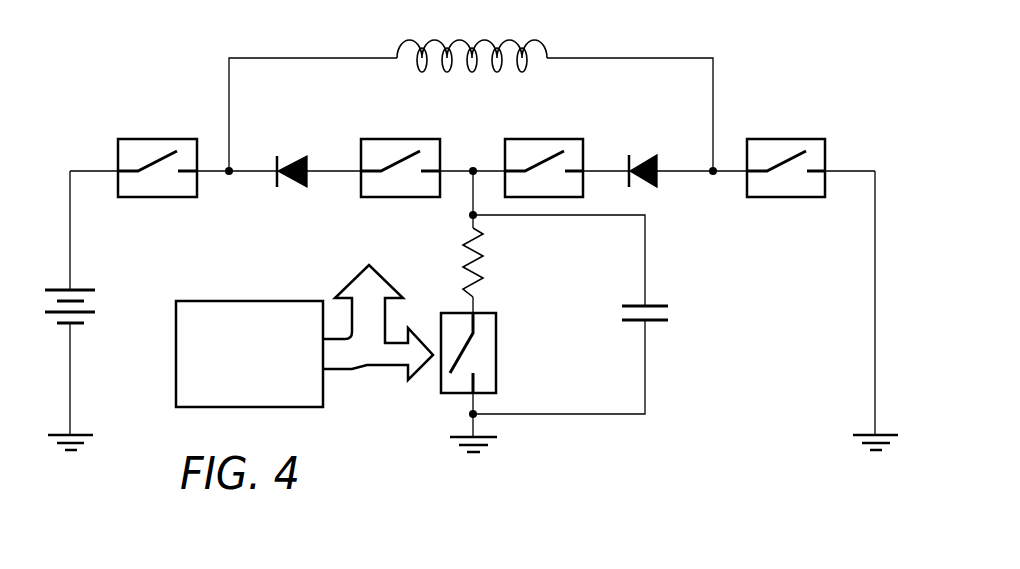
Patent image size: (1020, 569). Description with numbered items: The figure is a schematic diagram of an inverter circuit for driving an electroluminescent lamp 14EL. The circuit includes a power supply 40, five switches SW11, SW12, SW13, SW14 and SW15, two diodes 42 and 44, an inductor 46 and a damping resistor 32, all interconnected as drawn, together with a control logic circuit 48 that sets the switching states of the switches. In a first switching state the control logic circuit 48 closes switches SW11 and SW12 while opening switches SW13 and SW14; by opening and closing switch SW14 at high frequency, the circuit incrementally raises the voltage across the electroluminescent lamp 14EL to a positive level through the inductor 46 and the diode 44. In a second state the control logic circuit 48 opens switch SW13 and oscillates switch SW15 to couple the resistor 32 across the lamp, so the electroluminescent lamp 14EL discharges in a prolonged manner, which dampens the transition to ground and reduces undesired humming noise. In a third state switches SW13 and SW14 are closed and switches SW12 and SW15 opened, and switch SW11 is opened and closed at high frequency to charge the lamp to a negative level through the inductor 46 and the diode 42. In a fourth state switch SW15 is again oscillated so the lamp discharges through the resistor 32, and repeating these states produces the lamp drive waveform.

The switch SW11 is at (160, 139).
The switch SW12 is at (548, 139).
The switch SW13 is at (402, 139).
The switch SW14 is at (788, 139).
The switch SW15 is at (497, 352).
The diode 42 is at (291, 156).
The diode 44 is at (643, 156).
The inductor 46 is at (482, 40).
The power supply 40 is at (85, 301).
The control logic circuit 48 is at (251, 301).
The damping resistor 32 is at (485, 262).
The electroluminescent lamp 14EL is at (670, 313).